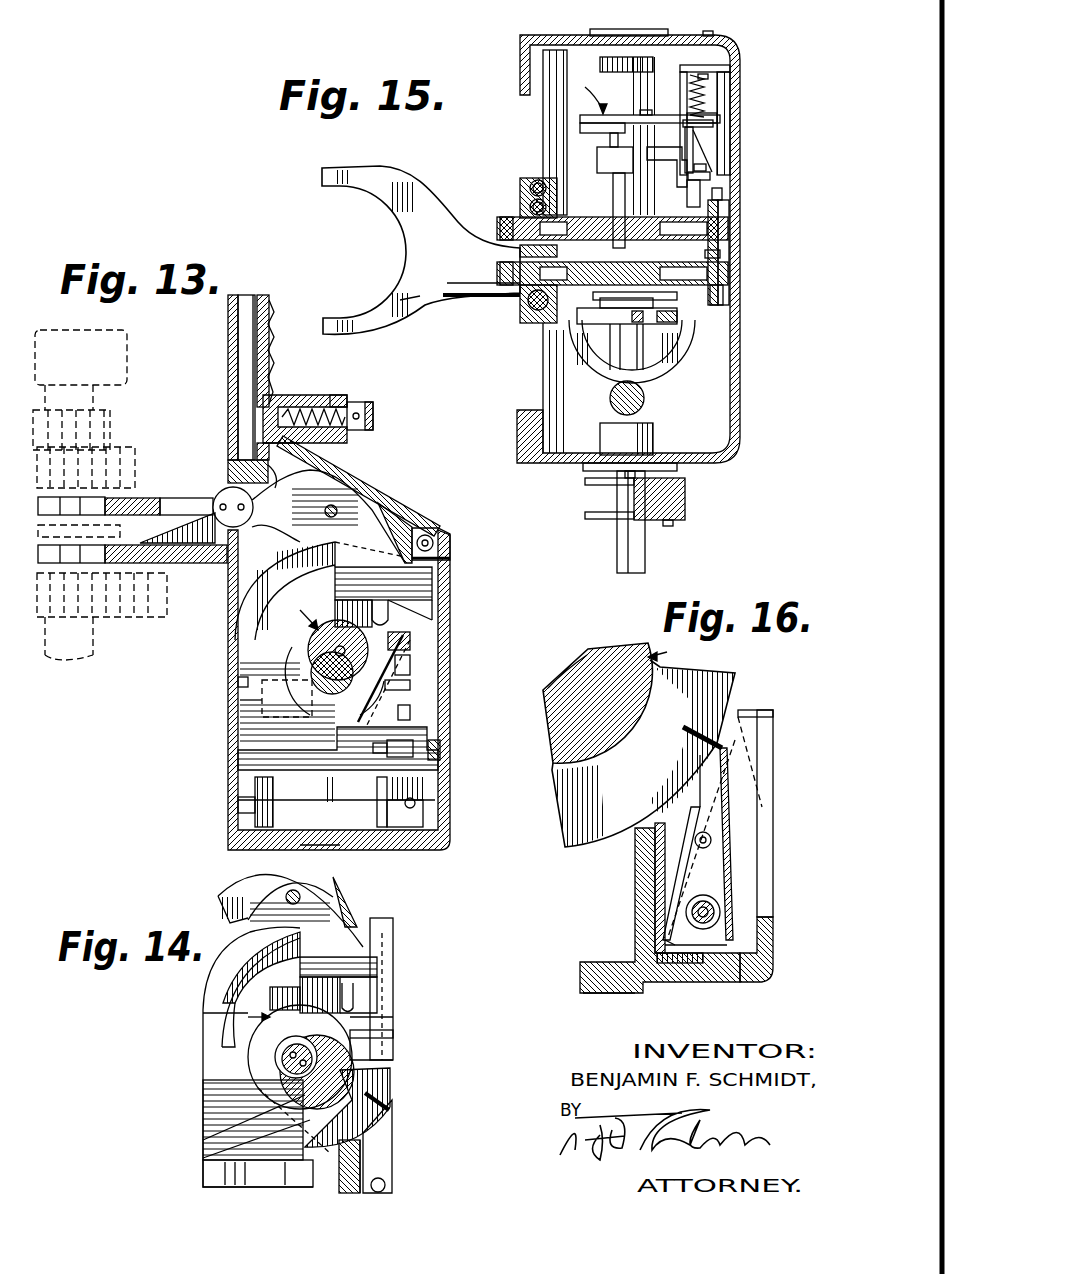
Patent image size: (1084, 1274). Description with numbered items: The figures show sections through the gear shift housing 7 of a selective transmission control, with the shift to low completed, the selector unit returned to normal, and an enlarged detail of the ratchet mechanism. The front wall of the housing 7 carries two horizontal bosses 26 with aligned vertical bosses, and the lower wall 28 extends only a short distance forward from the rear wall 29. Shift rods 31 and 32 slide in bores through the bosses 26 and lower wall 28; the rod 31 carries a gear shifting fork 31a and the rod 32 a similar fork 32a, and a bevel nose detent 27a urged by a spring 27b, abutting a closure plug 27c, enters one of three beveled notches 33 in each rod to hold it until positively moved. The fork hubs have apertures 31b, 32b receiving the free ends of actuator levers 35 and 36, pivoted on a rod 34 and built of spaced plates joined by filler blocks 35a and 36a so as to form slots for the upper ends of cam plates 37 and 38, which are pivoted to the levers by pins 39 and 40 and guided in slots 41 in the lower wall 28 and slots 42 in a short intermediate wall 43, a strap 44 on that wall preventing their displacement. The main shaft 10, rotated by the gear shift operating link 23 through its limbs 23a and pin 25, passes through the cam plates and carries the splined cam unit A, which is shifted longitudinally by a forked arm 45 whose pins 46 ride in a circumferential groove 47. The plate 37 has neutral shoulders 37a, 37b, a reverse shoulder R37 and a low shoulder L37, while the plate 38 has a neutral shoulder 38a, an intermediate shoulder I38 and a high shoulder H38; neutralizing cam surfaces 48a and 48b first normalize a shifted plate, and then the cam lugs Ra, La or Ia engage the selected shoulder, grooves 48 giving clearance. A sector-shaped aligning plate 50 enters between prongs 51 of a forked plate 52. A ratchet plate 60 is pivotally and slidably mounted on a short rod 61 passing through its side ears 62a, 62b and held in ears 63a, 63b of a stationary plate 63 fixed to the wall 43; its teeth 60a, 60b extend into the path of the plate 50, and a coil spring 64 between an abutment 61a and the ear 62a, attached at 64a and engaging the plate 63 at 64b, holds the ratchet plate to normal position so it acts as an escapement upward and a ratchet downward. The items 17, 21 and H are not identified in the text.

In FIG. 15, the housing 7 is at (737, 44).
In FIG. 13, the housing 7 is at (439, 528).
In FIG. 16, the housing 7 is at (771, 970).
In FIG. 15, the main shaft 10 is at (646, 560).
In FIG. 13, the main shaft 10 is at (330, 650).
In FIG. 14, the main shaft 10 is at (300, 1082).
In FIG. 16, the main shaft 10 is at (568, 663).
In FIG. 13, the member 17 is at (240, 706).
In FIG. 13, the spring housing bracket 21 is at (333, 396).
In FIG. 15, the gear shift operating link 23 is at (686, 505).
In FIG. 15, the limbs 23a is at (597, 483).
In FIG. 15, the pin 25 is at (672, 523).
In FIG. 13, the horizontal bosses 26 is at (272, 312).
In FIG. 13, the bevel nose detent 27a is at (290, 397).
In FIG. 13, the spring 27b is at (346, 397).
In FIG. 13, the closure plug 27c is at (374, 411).
In FIG. 15, the lower wall 28 is at (550, 350).
In FIG. 13, the lower wall 28 is at (245, 766).
In FIG. 13, the rear wall 29 is at (318, 850).
In FIG. 16, the rear wall 29 is at (615, 993).
In FIG. 15, the shift rod 31 is at (521, 340).
In FIG. 13, the shift rod 31 is at (240, 421).
In FIG. 15, the gear shifting fork 31a is at (422, 328).
In FIG. 13, the gear shifting fork 31a is at (174, 566).
In FIG. 15, the aperture 31b is at (515, 300).
In FIG. 13, the aperture 31b is at (228, 477).
In FIG. 15, the shift rod 32 is at (520, 177).
In FIG. 15, the gear shifting fork 32a is at (521, 190).
In FIG. 13, the gear shifting fork 32a is at (157, 496).
In FIG. 15, the aperture 32b is at (521, 208).
In FIG. 13, the beveled notches 33 is at (275, 368).
In FIG. 15, the rod 34 is at (729, 278).
In FIG. 13, the rod 34 is at (443, 542).
In FIG. 15, the actuator lever 35 is at (721, 270).
In FIG. 13, the actuator lever 35 is at (410, 500).
In FIG. 14, the actuator lever 35 is at (236, 888).
In FIG. 15, the filler block 35a is at (440, 268).
In FIG. 13, the filler block 35a is at (318, 473).
In FIG. 15, the actuator lever 36 is at (729, 228).
In FIG. 15, the filler block 36a is at (498, 228).
In FIG. 15, the cam plate 37 is at (700, 303).
In FIG. 13, the cam plate 37 is at (418, 503).
In FIG. 14, the cam plate 37 is at (238, 974).
In FIG. 13, the neutral cam shoulder 37a is at (390, 600).
In FIG. 14, the neutral cam shoulder 37a is at (350, 983).
In FIG. 13, the neutral cam shoulder 37b is at (305, 710).
In FIG. 14, the neutral cam shoulder 37b is at (270, 1073).
In FIG. 15, the cam plate 38 is at (719, 215).
In FIG. 13, the cam plate 38 is at (293, 588).
In FIG. 14, the cam plate 38 is at (225, 958).
In FIG. 13, the neutral cam shoulder 38a is at (388, 610).
In FIG. 14, the neutral cam shoulder 38a is at (353, 1007).
In FIG. 15, the pin 39 is at (605, 305).
In FIG. 13, the pin 39 is at (366, 520).
In FIG. 14, the pin 39 is at (302, 895).
In FIG. 15, the pin 40 is at (620, 205).
In FIG. 13, the slots 41 is at (250, 818).
In FIG. 13, the slots 42 is at (381, 825).
In FIG. 13, the intermediate wall 43 is at (371, 822).
In FIG. 14, the intermediate wall 43 is at (355, 1160).
In FIG. 16, the intermediate wall 43 is at (635, 893).
In FIG. 13, the strap 44 is at (441, 750).
In FIG. 15, the forked arm 45 is at (645, 398).
In FIG. 15, the pins 46 is at (683, 330).
In FIG. 15, the circumferential groove 47 is at (693, 345).
In FIG. 15, the grooves 48 is at (595, 137).
In FIG. 13, the grooves 48 is at (410, 748).
In FIG. 14, the grooves 48 is at (267, 1053).
In FIG. 13, the neutralizing cam surface 48a is at (318, 658).
In FIG. 14, the neutralizing cam surface 48a is at (287, 1087).
In FIG. 13, the neutralizing cam surface 48b is at (408, 690).
In FIG. 14, the neutralizing cam surface 48b is at (382, 1032).
In FIG. 15, the aligning plate 50 is at (720, 118).
In FIG. 13, the aligning plate 50 is at (408, 672).
In FIG. 14, the aligning plate 50 is at (392, 1080).
In FIG. 16, the aligning plate 50 is at (737, 674).
In FIG. 14, the prongs 51 is at (388, 1061).
In FIG. 14, the forked plate 52 is at (393, 937).
In FIG. 14, the ratchet plate 60 is at (385, 1133).
In FIG. 16, the ratchet plate 60 is at (730, 810).
In FIG. 15, the ratchet tooth 60a is at (700, 127).
In FIG. 14, the ratchet tooth 60a is at (397, 1103).
In FIG. 16, the ratchet tooth 60a is at (720, 742).
In FIG. 15, the ratchet tooth 60b is at (700, 157).
In FIG. 13, the ratchet tooth 60b is at (408, 712).
In FIG. 15, the short rod 61 is at (700, 193).
In FIG. 14, the short rod 61 is at (385, 1187).
In FIG. 16, the short rod 61 is at (715, 930).
In FIG. 15, the abutment 61a is at (706, 170).
In FIG. 16, the abutment 61a is at (718, 905).
In FIG. 15, the side ear 62a is at (706, 31).
In FIG. 15, the side ear 62b is at (708, 180).
In FIG. 15, the stationary plate 63 is at (681, 85).
In FIG. 14, the stationary plate 63 is at (363, 1175).
In FIG. 16, the stationary plate 63 is at (658, 860).
In FIG. 15, the ear 63a is at (718, 67).
In FIG. 16, the ear 63a is at (698, 963).
In FIG. 15, the ear 63b is at (721, 205).
In FIG. 15, the coil spring 64 is at (703, 103).
In FIG. 16, the coil spring 64 is at (700, 870).
In FIG. 15, the spring end attachment 64a is at (706, 82).
In FIG. 16, the spring end attachment 64a is at (711, 838).
In FIG. 15, the spring end engagement 64b is at (648, 110).
In FIG. 16, the spring end engagement 64b is at (670, 945).
In FIG. 15, the rotary selective actuator cam unit A is at (587, 91).
In FIG. 13, the rotary selective actuator cam unit A is at (299, 613).
In FIG. 14, the rotary selective actuator cam unit A is at (249, 1016).
In FIG. 16, the rotary selective actuator cam unit A is at (665, 651).
In FIG. 15, the high position H is at (600, 152).
In FIG. 13, the reverse cam shoulder R37 is at (320, 675).
In FIG. 14, the reverse cam shoulder R37 is at (270, 1040).
In FIG. 13, the intermediate cam shoulder I38 is at (230, 678).
In FIG. 13, the low cam shoulder L37 is at (405, 635).
In FIG. 14, the low cam shoulder L37 is at (372, 1015).
In FIG. 15, the reverse cam lug Ra is at (600, 335).
In FIG. 13, the reverse cam lug Ra is at (228, 702).
In FIG. 14, the reverse cam lug Ra is at (213, 1014).
In FIG. 13, the low cam lug La is at (410, 650).
In FIG. 14, the intermediate cam lug Ia is at (298, 1095).
In FIG. 13, the high cam shoulder H38 is at (408, 660).